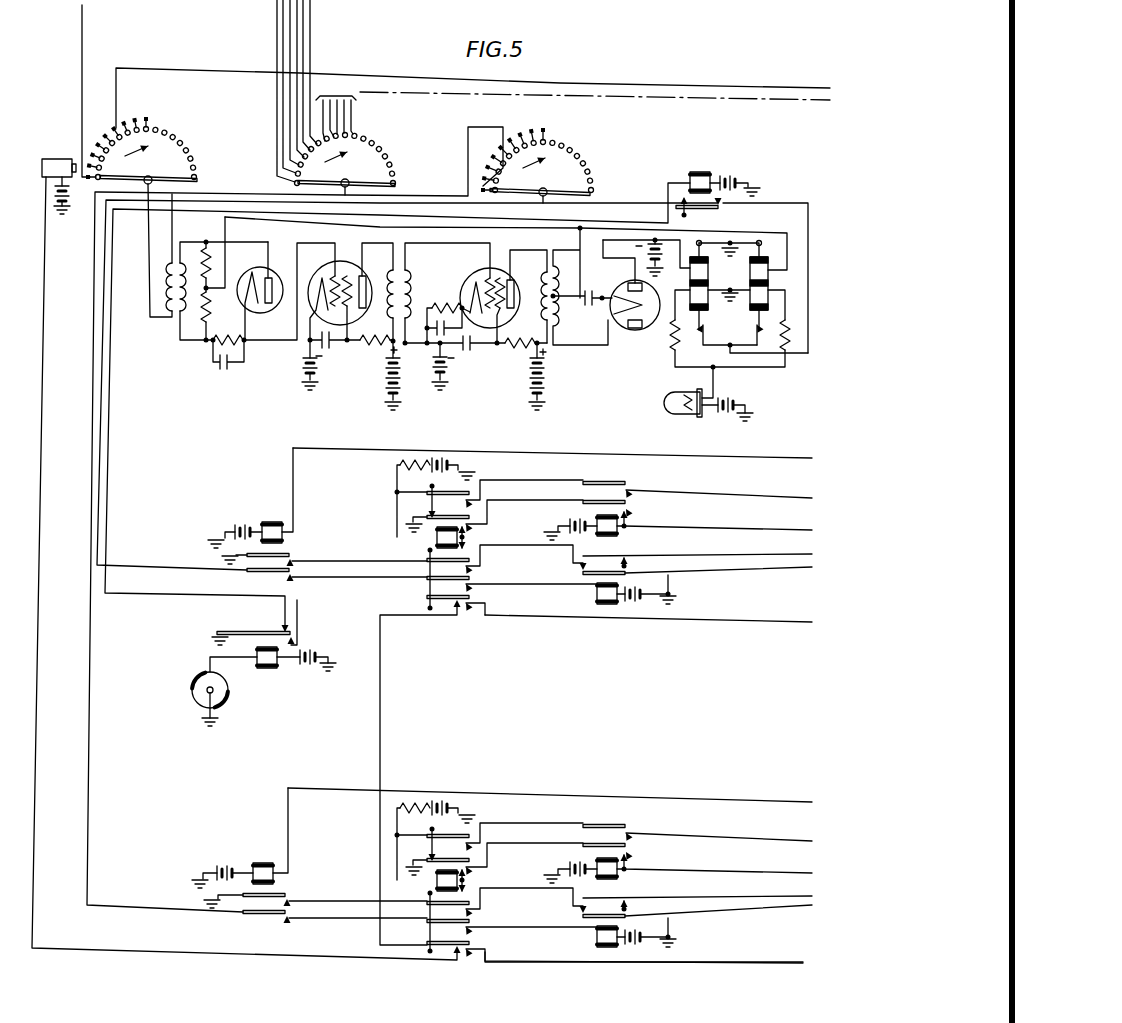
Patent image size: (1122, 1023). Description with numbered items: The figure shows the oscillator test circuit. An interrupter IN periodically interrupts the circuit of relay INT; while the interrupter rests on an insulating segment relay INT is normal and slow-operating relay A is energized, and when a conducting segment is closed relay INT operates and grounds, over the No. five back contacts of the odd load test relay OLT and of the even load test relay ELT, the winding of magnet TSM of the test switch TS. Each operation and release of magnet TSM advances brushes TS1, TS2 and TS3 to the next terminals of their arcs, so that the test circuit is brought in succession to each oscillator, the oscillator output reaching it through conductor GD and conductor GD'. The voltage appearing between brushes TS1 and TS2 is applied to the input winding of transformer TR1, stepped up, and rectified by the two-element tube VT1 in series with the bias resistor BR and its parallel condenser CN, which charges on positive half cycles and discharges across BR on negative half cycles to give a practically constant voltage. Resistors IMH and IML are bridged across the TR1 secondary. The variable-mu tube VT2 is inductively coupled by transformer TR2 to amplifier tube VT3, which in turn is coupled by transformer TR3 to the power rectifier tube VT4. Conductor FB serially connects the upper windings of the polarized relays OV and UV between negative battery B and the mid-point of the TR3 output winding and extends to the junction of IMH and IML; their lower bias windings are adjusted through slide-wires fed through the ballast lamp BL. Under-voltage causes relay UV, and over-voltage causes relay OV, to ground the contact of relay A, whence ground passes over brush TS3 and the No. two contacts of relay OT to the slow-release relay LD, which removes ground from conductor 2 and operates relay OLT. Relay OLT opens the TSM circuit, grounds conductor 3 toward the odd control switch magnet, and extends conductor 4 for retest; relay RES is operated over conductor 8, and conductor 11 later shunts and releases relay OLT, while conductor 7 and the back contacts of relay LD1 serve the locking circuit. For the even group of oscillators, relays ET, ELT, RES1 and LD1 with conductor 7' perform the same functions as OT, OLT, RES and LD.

The conductor GD is at (105, 91).
The ground conductor GD' is at (473, 84).
The magnet of the test switch TSM is at (62, 159).
The brush of the test switch TS1 is at (179, 158).
The brush of the test switch TS2 is at (337, 180).
The brush of the test switch TS3 is at (532, 187).
The test switch TS is at (623, 113).
The relay A is at (705, 172).
The conductor FB is at (757, 220).
The resistor IMH is at (207, 258).
The resistor IML is at (204, 322).
The transformer TR1 is at (177, 318).
The transformer TR2 is at (406, 270).
The transformer TR3 is at (545, 330).
The bias resistor BR is at (229, 329).
The condenser CN is at (223, 370).
The two element vacuum tube VT1 is at (274, 268).
The variable-mu vacuum tube VT2 is at (348, 262).
The amplifier tube VT3 is at (496, 268).
The power rectifier tube VT4 is at (632, 332).
The battery B is at (313, 373).
The polarized relay UV is at (752, 277).
The polarized relay OV is at (702, 297).
The ballast lamp BL is at (660, 405).
The relay OT is at (272, 521).
The odd load test relay OLT is at (437, 540).
The relay RES is at (616, 530).
The slow-release relay LD is at (597, 595).
The interrupter IN is at (191, 690).
The relay INT is at (268, 668).
The conductor 7 is at (552, 448).
The conductor 11 is at (780, 496).
The conductor 8 is at (780, 530).
The conductor 4 is at (780, 552).
The conductor 2 is at (782, 569).
The conductor 3 is at (782, 626).
The relay ET is at (263, 862).
The even load test relay ELT is at (457, 877).
The relay RES1 is at (616, 873).
The relay LD1 is at (597, 935).
The conductor 7' is at (550, 860).